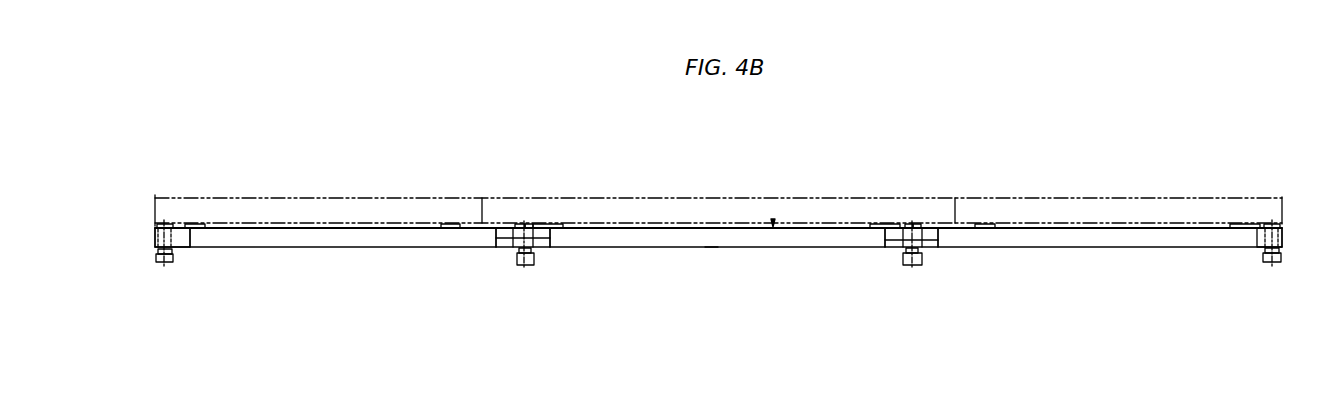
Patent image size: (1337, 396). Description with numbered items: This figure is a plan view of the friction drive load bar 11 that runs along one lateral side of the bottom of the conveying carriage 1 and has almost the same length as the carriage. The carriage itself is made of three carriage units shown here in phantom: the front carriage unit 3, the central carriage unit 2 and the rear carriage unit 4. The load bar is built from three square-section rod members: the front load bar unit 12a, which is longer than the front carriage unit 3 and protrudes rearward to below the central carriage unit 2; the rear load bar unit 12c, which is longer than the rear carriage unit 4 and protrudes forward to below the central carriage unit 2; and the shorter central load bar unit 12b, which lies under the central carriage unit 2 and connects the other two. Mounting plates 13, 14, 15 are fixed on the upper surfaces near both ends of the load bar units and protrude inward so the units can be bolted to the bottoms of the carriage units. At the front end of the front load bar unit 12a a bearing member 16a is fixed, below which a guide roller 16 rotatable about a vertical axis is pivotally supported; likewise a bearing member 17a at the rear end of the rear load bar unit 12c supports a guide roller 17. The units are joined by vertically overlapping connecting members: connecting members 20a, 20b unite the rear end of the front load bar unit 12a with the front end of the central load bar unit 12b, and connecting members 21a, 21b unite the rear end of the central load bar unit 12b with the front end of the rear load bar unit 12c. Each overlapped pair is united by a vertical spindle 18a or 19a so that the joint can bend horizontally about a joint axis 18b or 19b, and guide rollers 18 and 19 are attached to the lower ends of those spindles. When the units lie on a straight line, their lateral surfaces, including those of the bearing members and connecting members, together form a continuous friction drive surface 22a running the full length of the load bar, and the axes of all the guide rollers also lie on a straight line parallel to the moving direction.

The conveying carriage 1 is at (1060, 192).
The central carriage unit 2 is at (648, 205).
The front carriage unit 3 is at (315, 197).
The rear carriage unit 4 is at (1117, 207).
The friction drive load bar 11 is at (773, 220).
The front load bar unit 12a is at (305, 248).
The central load bar unit 12b is at (763, 248).
The rear load bar unit 12c is at (1095, 250).
The mounting plate 13 is at (200, 224).
The mounting plate 14 is at (552, 224).
The mounting plate 15 is at (982, 224).
The guide roller 16 is at (163, 264).
The bearing member 16a is at (185, 241).
The guide roller 17 is at (1272, 264).
The bearing member 17a is at (1245, 241).
The guide roller 18 is at (517, 262).
The vertical spindle 18a is at (529, 224).
The joint axis 18b is at (526, 224).
The guide roller 19 is at (918, 265).
The vertical spindle 19a is at (908, 224).
The joint axis 19b is at (914, 224).
The connecting member 20a is at (500, 238).
The connecting member 20b is at (553, 238).
The connecting member 21a is at (887, 241).
The connecting member 21b is at (935, 241).
The friction drive surface 22a is at (710, 243).